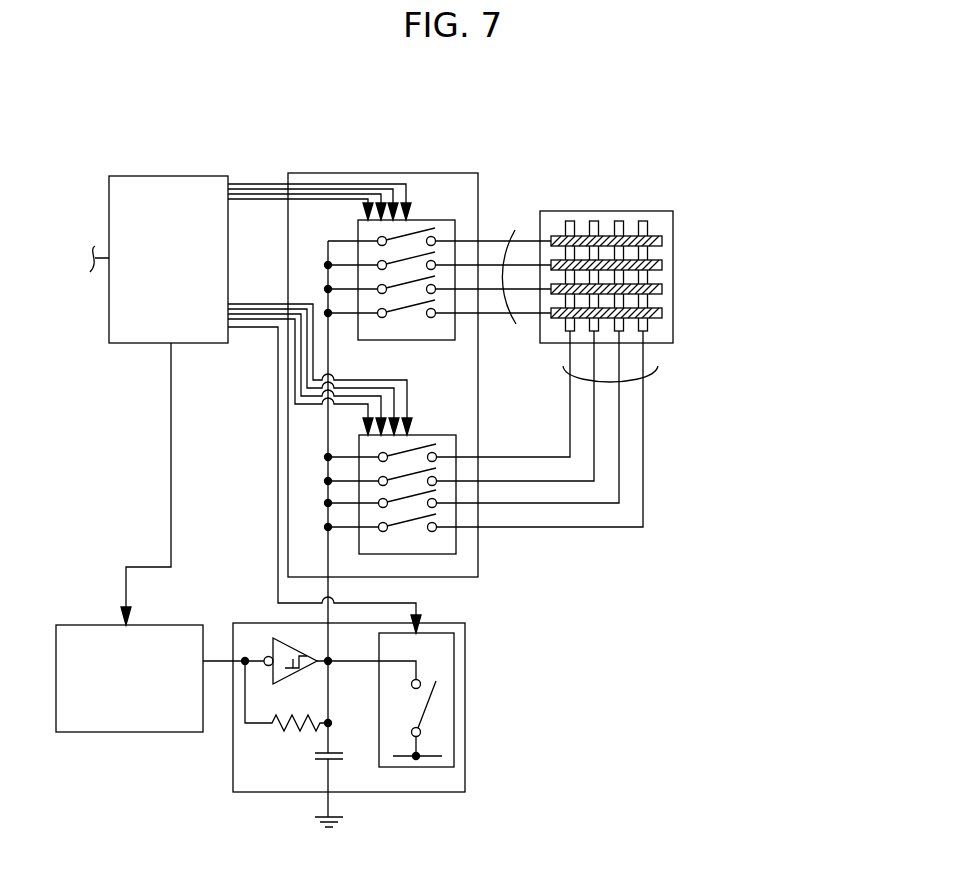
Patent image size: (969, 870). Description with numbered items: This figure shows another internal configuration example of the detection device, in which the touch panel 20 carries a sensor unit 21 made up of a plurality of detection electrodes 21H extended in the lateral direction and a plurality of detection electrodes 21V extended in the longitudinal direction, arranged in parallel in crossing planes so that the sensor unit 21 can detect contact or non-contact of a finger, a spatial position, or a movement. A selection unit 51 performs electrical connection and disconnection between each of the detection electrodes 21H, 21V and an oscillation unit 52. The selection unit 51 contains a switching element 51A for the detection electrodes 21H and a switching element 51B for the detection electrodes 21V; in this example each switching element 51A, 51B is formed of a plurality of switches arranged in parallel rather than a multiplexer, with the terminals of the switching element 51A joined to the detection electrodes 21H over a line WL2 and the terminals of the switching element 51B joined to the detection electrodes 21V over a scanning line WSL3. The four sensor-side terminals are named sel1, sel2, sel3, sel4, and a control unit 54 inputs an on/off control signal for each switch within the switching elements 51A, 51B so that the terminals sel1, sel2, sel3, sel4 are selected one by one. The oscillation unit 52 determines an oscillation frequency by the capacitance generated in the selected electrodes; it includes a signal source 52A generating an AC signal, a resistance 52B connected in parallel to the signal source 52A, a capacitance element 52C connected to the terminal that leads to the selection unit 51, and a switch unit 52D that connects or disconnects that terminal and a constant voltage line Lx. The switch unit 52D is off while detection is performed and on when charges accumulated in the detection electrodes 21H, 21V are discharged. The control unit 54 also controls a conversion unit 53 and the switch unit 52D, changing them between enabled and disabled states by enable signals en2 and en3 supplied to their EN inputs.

The control unit 54 is at (183, 176).
The selection unit 51 is at (384, 173).
The switching element 51A is at (432, 220).
The switching element 51B is at (445, 435).
The touch panel 20 is at (694, 239).
The detection electrode 21V is at (570, 221).
The detection electrode 21H is at (662, 241).
The sensor unit 21 is at (808, 200).
The conversion unit 53 is at (78, 625).
The oscillation unit 52 is at (380, 695).
The signal source 52A is at (302, 644).
The resistance 52B is at (284, 723).
The capacitance element 52C is at (318, 756).
The switch unit 52D is at (455, 706).
The constant voltage line Lx is at (428, 753).
The wiring lines WL2 is at (511, 330).
The scanning line WSL3 is at (659, 372).
The terminal sel1 is at (329, 184).
The terminal sel2 is at (298, 189).
The terminal sel3 is at (270, 194).
The terminal sel4 is at (240, 199).
The enable signal en2 is at (171, 507).
The enable signal en3 is at (278, 520).